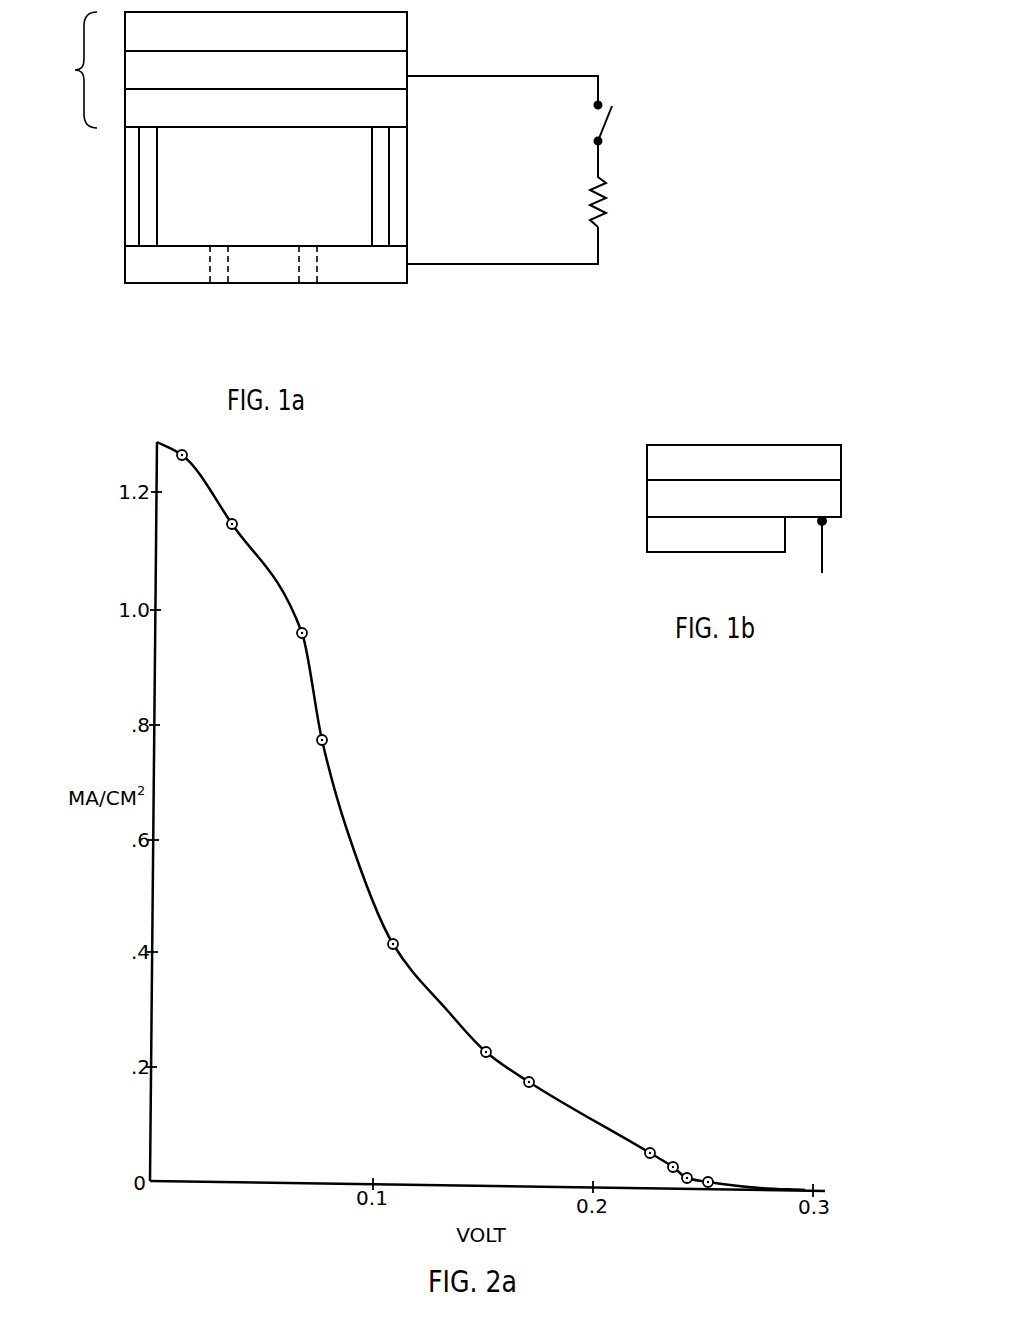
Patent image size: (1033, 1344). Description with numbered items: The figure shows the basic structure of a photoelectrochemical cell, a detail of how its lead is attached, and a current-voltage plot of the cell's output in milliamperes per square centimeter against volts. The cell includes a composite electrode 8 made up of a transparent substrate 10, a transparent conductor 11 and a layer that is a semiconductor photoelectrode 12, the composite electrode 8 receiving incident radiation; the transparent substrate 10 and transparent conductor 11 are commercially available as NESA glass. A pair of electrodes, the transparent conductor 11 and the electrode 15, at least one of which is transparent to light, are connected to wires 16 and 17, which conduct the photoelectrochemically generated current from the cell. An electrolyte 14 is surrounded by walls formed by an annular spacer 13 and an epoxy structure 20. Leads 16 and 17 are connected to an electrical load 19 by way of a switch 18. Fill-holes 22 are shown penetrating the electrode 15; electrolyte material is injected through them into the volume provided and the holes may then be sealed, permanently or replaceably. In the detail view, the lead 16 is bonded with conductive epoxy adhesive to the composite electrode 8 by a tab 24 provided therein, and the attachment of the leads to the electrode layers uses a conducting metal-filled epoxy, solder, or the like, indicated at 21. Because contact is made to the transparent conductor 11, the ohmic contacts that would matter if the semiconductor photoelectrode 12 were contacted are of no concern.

In FIG. 1A, the composite electrode 8 is at (71, 84).
In FIG. 1A, the transparent substrate 10 is at (125, 35).
In FIG. 1B, the transparent substrate 10 is at (647, 462).
In FIG. 1A, the transparent conductor 11 is at (125, 70).
In FIG. 1B, the transparent conductor 11 is at (647, 500).
In FIG. 1A, the semiconductor photoelectrode 12 is at (125, 103).
In FIG. 1B, the semiconductor photoelectrode 12 is at (647, 533).
In FIG. 1A, the annular spacer 13 is at (148, 182).
In FIG. 1A, the electrolyte 14 is at (193, 203).
In FIG. 1A, the electrode 15 is at (125, 265).
In FIG. 1A, the wire 16 is at (500, 76).
In FIG. 1B, the wire 16 is at (825, 555).
In FIG. 1A, the wire 17 is at (490, 264).
In FIG. 1A, the switch 18 is at (612, 120).
In FIG. 1A, the electrical load 19 is at (602, 200).
In FIG. 1A, the epoxy structure 20 is at (130, 152).
In FIG. 1B, the conducting metal-filled epoxy, solder, or the like 21 is at (826, 523).
In FIG. 1A, the fill-holes 22 is at (217, 285).
In FIG. 1B, the tab 24 is at (803, 520).